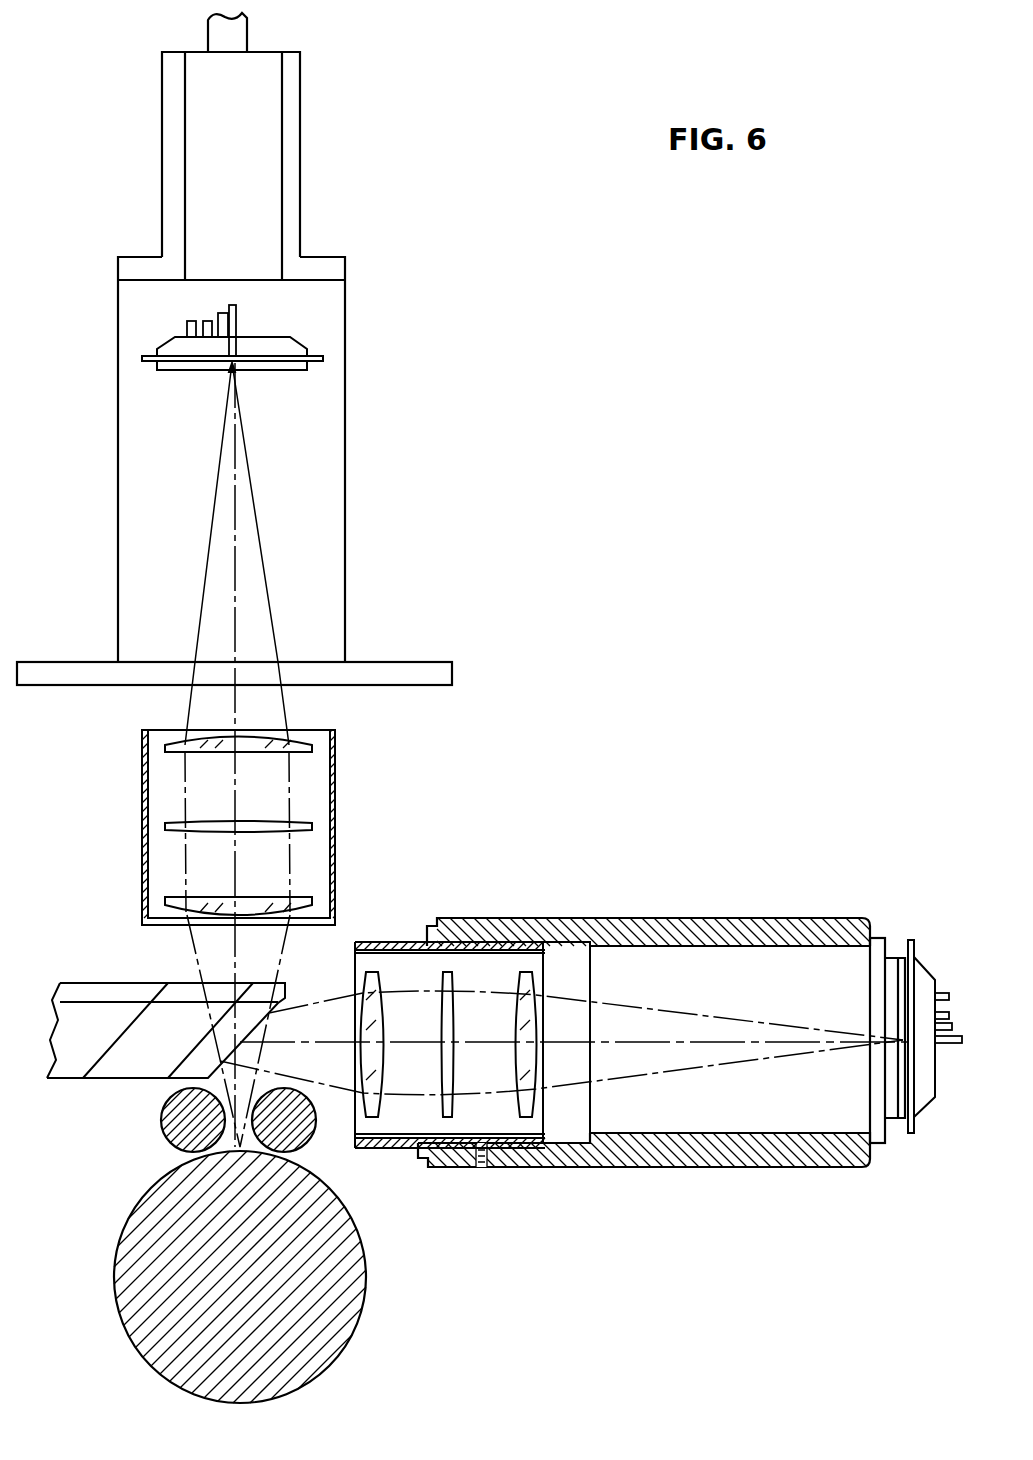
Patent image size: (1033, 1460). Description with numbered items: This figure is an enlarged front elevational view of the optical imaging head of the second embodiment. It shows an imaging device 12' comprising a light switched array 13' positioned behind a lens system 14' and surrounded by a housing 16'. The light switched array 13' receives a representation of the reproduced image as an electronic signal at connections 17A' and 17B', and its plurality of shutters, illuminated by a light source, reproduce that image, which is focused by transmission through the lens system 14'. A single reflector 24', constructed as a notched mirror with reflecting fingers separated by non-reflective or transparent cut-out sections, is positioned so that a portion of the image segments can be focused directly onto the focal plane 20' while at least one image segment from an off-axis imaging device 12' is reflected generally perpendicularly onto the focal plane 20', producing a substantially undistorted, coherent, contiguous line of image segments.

The imaging device 12' is at (461, 590).
The light switched array 13' is at (538, 729).
The lens system 14' is at (368, 925).
The housing 16' is at (366, 939).
The connection 17A' is at (508, 671).
The connection 17B' is at (512, 721).
The focal plane 20' is at (232, 1245).
The reflector 24' is at (166, 1012).